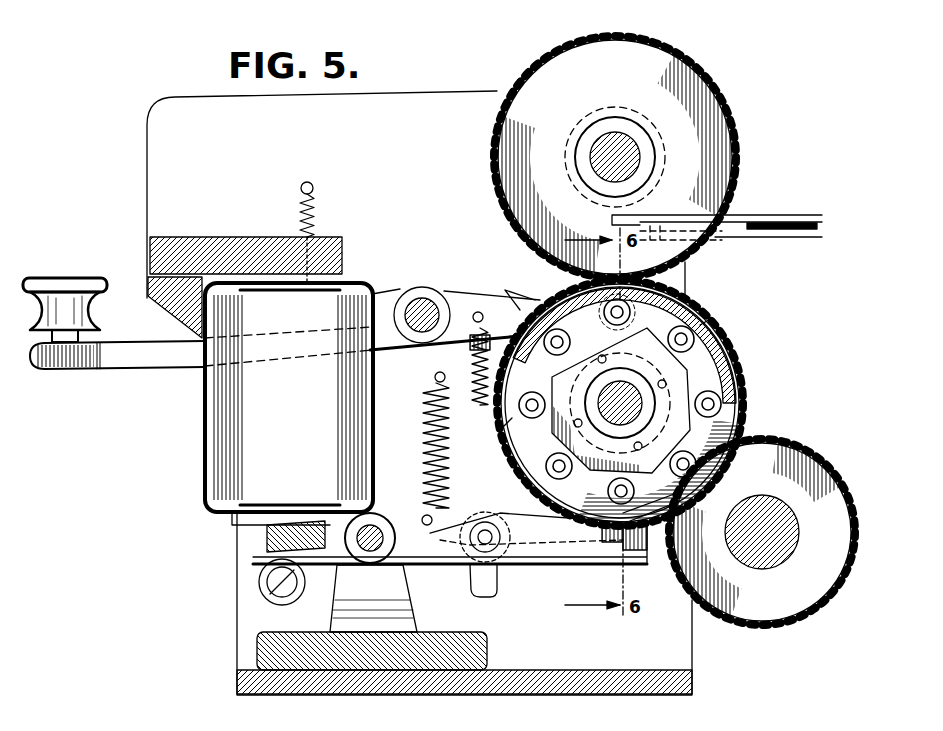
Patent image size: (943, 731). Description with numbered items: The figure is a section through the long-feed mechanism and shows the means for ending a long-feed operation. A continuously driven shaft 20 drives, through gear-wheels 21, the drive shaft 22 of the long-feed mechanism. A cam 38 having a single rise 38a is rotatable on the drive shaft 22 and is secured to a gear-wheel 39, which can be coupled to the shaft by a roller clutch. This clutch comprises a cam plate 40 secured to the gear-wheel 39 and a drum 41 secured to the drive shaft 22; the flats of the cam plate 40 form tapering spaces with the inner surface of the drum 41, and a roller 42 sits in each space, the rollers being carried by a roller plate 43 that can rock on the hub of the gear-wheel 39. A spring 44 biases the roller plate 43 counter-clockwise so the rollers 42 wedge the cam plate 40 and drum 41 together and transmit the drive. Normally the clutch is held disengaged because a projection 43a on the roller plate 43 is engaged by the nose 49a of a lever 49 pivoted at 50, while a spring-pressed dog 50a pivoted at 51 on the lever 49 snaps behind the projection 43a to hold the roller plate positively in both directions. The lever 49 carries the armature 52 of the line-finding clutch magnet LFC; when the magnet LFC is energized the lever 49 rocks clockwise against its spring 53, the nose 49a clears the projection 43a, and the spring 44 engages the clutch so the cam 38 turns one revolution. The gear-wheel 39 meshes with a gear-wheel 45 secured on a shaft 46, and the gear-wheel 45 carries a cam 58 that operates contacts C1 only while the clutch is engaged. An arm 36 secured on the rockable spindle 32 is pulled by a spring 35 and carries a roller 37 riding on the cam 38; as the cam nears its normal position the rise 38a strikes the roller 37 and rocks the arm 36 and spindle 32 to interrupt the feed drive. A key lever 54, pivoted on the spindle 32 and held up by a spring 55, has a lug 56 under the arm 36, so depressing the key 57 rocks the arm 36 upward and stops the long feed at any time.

The line-finding clutch magnet LFC is at (235, 460).
The key 57 is at (64, 282).
The key lever 54 is at (130, 355).
The arm 36 is at (452, 292).
The rockable spindle 32 is at (414, 300).
The lug 56 is at (470, 345).
The spring 35 is at (476, 393).
The spring 53 is at (428, 415).
The spring 55 is at (300, 222).
The gear-wheel 45 is at (715, 165).
The shaft 46 is at (612, 142).
The cam 58 is at (648, 127).
The contacts C1 is at (670, 230).
The roller 37 is at (686, 280).
The cam 38 is at (735, 432).
The cam rise 38a is at (511, 288).
The gear-wheel 39 is at (722, 338).
The drum 41 is at (700, 325).
The rollers 42 is at (718, 405).
The cam plate 40 is at (690, 372).
The drive shaft 22 is at (636, 404).
The roller plate 43 is at (503, 427).
The gear-wheels 21 is at (822, 468).
The shaft 20 is at (770, 560).
The lever 49 is at (520, 566).
The pivot 50 is at (370, 563).
The spring-pressed dog 50a is at (487, 523).
The pivot 51 is at (440, 513).
The armature 52 is at (280, 536).
The projection 43a is at (610, 545).
The nose 49a is at (641, 553).
The spring 44 is at (681, 503).